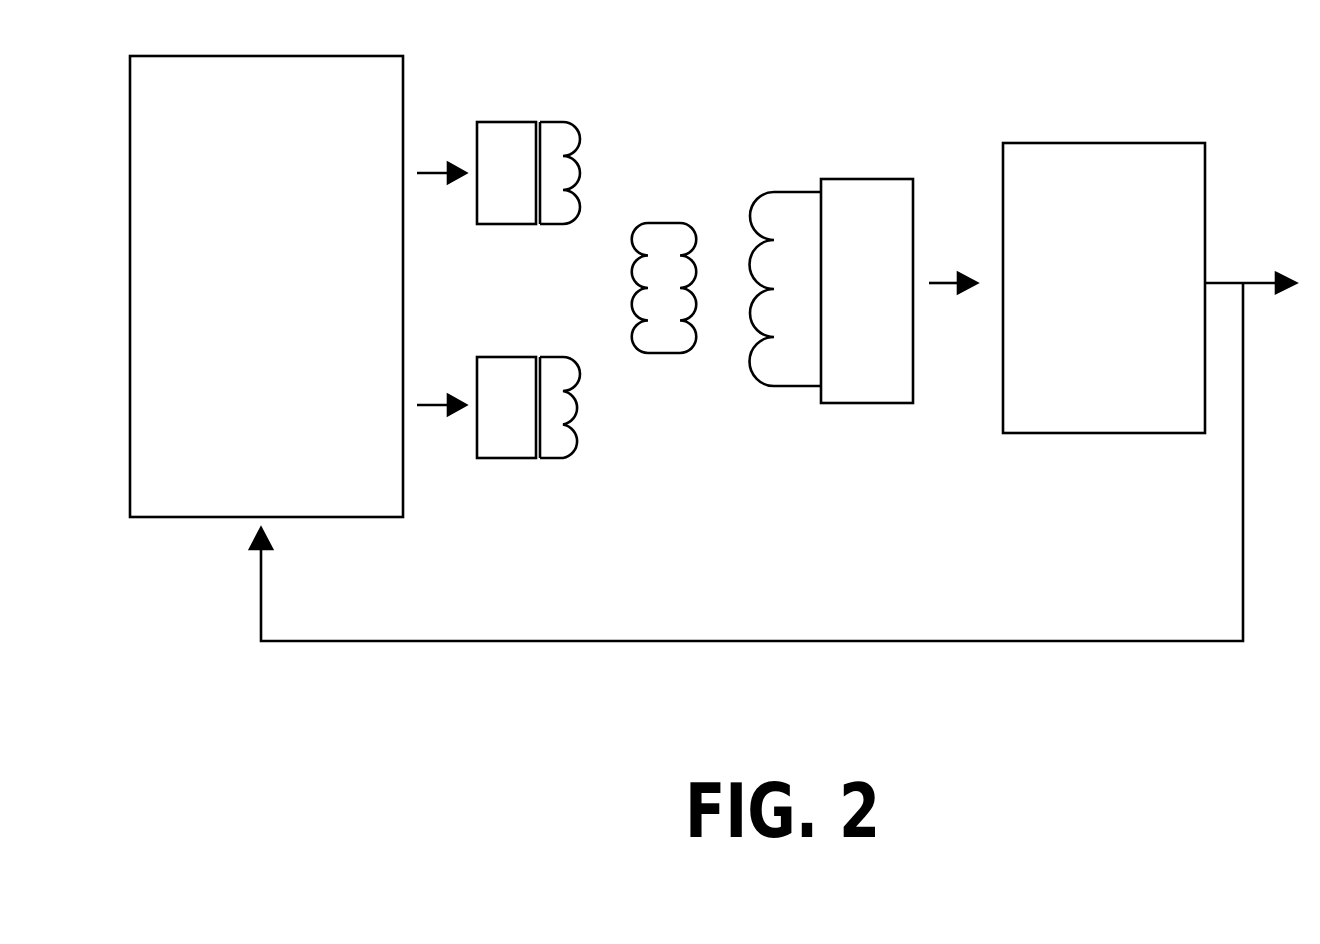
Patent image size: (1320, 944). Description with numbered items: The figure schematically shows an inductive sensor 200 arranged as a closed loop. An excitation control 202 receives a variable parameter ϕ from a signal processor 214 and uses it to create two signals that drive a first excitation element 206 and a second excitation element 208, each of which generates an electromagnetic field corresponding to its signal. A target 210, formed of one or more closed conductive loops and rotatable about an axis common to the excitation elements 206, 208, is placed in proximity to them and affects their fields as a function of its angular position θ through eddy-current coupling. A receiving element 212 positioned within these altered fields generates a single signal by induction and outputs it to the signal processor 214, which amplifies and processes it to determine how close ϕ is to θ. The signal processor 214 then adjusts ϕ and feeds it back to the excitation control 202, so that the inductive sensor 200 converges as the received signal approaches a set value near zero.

The inductive sensor 200 is at (1183, 738).
The excitation control 202 is at (293, 302).
The excitation element 206 is at (566, 120).
The excitation element 208 is at (561, 353).
The target 210 is at (636, 222).
The receiving element 212 is at (757, 185).
The signal processor 214 is at (1133, 301).